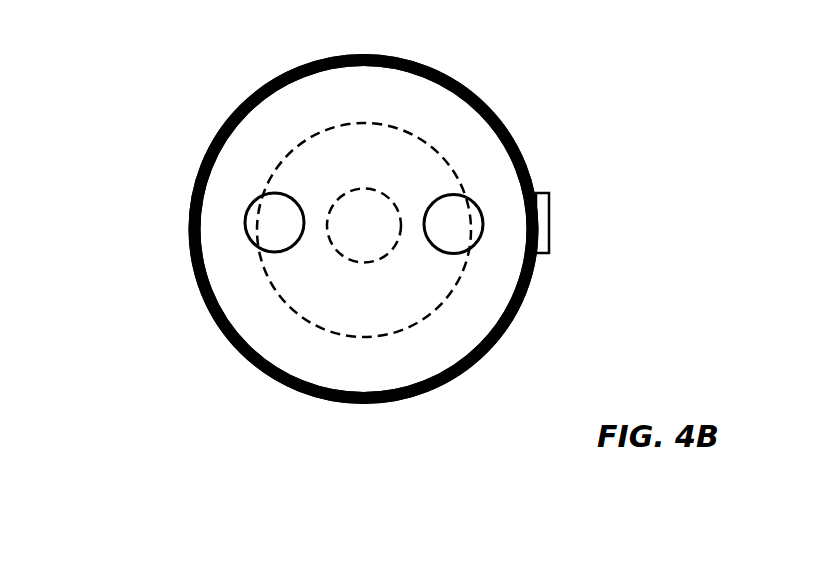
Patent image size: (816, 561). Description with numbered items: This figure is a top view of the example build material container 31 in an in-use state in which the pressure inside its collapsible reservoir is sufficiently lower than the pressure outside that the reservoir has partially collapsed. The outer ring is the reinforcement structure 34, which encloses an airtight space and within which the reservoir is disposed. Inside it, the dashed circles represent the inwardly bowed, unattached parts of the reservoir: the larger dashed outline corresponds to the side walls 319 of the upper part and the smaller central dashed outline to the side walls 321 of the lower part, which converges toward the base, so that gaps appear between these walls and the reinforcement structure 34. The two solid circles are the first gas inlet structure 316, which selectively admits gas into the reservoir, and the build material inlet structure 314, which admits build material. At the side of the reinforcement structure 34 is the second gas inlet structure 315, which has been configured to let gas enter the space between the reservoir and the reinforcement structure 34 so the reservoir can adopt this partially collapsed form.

The container 31 is at (137, 62).
The reinforcement structure 34 is at (190, 248).
The side walls of the upper part 319 is at (292, 147).
The side walls of the lower part 321 is at (399, 212).
The first gas inlet structure 316 is at (258, 216).
The build material inlet structure 314 is at (453, 232).
The second gas inlet structure 315 is at (540, 214).